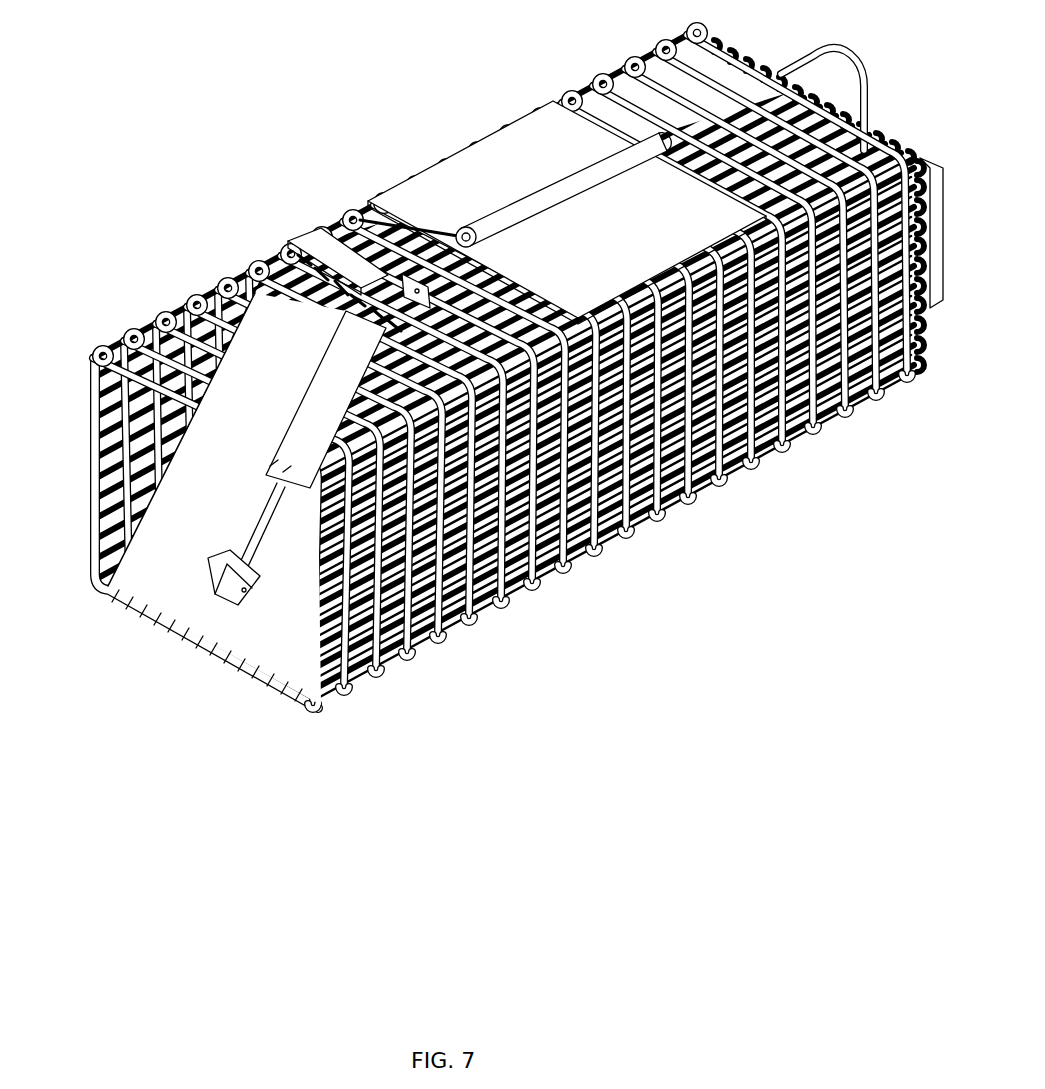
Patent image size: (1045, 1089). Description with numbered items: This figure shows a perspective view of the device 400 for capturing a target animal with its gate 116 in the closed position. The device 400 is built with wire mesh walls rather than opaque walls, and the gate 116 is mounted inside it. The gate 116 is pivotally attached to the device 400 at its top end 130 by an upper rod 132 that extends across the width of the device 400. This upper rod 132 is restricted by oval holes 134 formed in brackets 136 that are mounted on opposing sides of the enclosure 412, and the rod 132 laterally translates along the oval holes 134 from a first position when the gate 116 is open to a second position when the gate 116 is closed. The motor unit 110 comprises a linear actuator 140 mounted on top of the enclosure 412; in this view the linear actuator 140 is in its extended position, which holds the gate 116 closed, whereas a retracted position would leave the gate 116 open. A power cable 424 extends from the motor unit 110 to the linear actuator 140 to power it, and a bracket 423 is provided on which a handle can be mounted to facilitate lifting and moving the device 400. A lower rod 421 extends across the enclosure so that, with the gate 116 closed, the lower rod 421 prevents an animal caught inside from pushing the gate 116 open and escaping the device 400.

The device 400 is at (463, 78).
The motor unit 110 is at (920, 140).
The gate 116 is at (106, 350).
The top end 130 is at (334, 208).
The upper rod 132 is at (620, 525).
The oval holes 134 is at (480, 377).
The brackets 136 is at (528, 567).
The linear actuator 140 is at (298, 418).
The enclosure 412 is at (468, 608).
The lower rod 421 is at (196, 622).
The bracket 423 is at (476, 150).
The power cable 424 is at (436, 236).